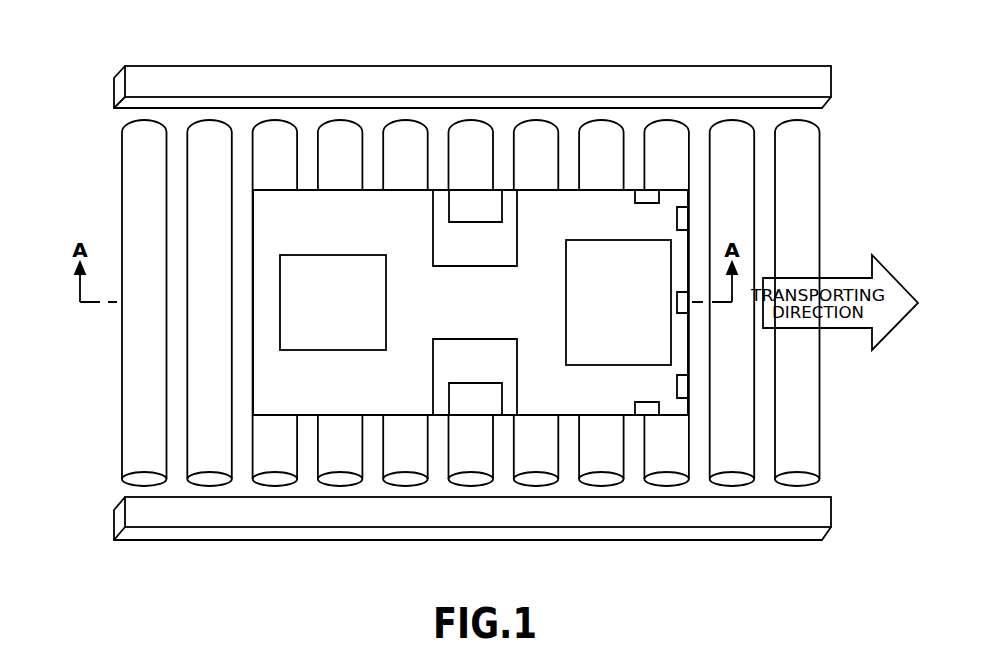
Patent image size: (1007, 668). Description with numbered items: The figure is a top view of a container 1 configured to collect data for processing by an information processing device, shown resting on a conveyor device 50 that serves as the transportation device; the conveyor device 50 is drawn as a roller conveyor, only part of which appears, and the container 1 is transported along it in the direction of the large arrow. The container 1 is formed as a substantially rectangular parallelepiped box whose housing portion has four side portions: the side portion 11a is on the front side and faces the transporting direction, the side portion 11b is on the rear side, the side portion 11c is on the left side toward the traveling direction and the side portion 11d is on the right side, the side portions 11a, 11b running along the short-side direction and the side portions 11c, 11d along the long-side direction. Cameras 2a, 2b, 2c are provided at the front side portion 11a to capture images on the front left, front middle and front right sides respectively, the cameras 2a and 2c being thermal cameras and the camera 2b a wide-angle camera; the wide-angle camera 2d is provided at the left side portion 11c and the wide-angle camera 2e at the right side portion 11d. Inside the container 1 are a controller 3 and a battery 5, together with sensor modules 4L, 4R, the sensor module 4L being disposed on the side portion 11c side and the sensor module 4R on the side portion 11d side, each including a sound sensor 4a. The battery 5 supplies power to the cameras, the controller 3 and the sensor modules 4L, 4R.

The conveyor device 50 is at (103, 66).
The container 1 is at (252, 213).
The controller 3 is at (318, 255).
The battery 5 is at (595, 240).
The sensor module 4L is at (472, 190).
The sensor module 4R is at (472, 415).
The sound sensor 4a is at (477, 222).
The side portion 11a is at (688, 248).
The side portion 11b is at (253, 373).
The side portion 11c is at (376, 190).
The side portion 11d is at (375, 416).
The camera 2a is at (688, 219).
The camera 2b is at (688, 309).
The camera 2c is at (688, 389).
The camera 2d is at (652, 190).
The camera 2e is at (652, 415).